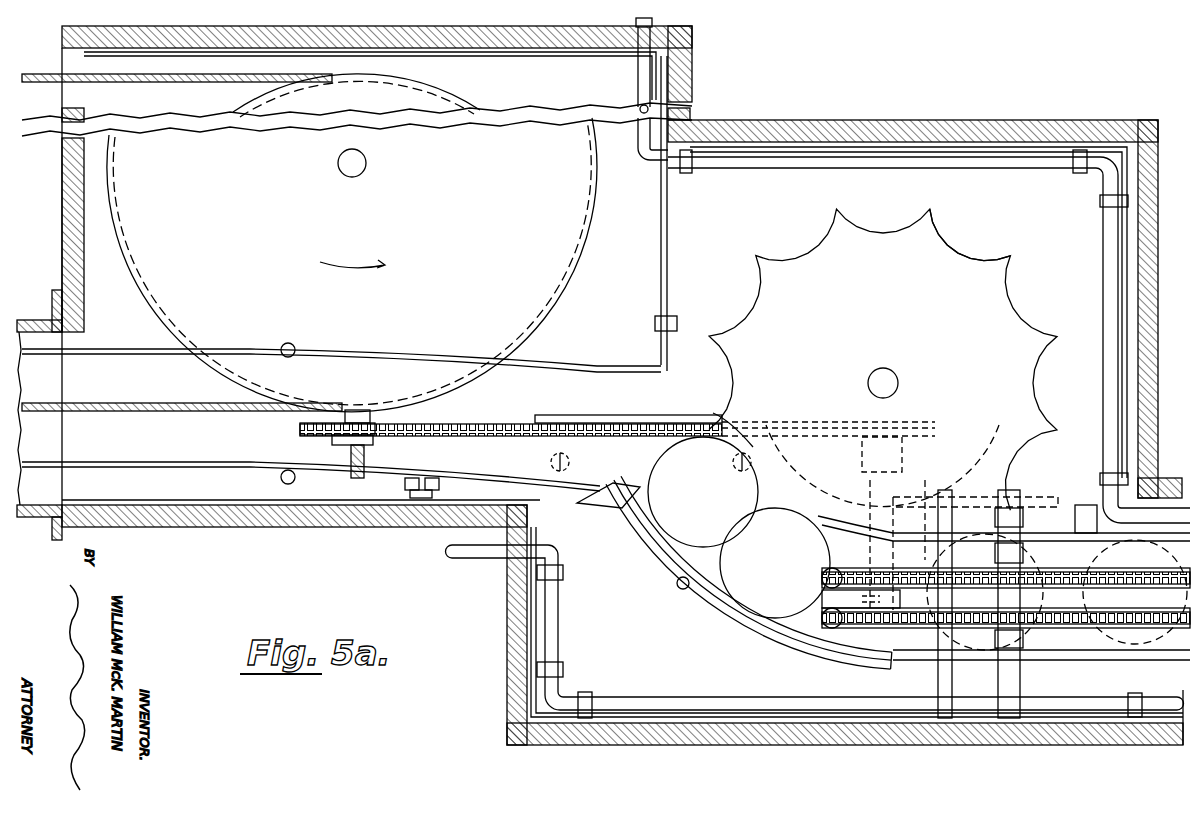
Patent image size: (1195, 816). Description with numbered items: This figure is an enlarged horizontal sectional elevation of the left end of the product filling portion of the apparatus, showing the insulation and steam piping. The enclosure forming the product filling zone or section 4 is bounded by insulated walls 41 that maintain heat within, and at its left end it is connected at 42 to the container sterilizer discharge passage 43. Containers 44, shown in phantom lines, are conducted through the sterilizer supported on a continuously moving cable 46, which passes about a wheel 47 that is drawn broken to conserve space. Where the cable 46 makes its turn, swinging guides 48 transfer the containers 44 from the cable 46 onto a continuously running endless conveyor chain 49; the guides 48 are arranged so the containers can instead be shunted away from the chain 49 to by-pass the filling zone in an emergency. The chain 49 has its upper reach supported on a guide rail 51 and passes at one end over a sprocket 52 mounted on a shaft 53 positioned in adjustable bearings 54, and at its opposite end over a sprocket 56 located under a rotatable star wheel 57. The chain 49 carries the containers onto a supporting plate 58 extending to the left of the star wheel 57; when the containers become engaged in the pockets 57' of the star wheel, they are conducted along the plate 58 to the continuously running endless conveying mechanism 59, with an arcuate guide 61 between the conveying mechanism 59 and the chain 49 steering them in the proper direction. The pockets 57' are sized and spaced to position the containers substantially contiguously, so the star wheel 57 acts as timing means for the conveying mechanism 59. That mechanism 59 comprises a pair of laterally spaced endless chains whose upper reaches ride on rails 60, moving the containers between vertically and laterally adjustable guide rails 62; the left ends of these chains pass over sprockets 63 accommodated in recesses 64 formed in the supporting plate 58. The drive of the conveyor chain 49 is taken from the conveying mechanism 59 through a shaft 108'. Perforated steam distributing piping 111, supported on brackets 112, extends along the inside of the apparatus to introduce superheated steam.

The product filling zone or section 4 is at (507, 680).
The insulated walls 41 is at (1027, 120).
The connection 42 is at (78, 517).
The container sterilizer discharge passage 43 is at (38, 490).
The containers 44 is at (653, 461).
The continuously moving cable 46 is at (158, 84).
The wheel 47 is at (410, 97).
The swinging guides 48 is at (542, 363).
The endless conveyor chain 49 is at (457, 430).
The guide rail 51 is at (485, 423).
The sprocket 52 is at (312, 440).
The shaft 53 is at (365, 462).
The adjustable bearings 54 is at (333, 492).
The sprocket 56 is at (925, 420).
The star wheel 57 is at (883, 359).
The pockets 57' is at (970, 235).
The supporting plate 58 is at (683, 410).
The endless conveying mechanism 59 is at (1107, 583).
The rails 60 is at (1125, 563).
The arcuate guide 61 is at (728, 618).
The adjustable guide rails 62 is at (1048, 537).
The sprockets 63 is at (837, 553).
The recesses 64 is at (822, 573).
The shaft 108' is at (964, 543).
The perforated steam distributing piping 111 is at (1112, 277).
The brackets 112 is at (1135, 692).